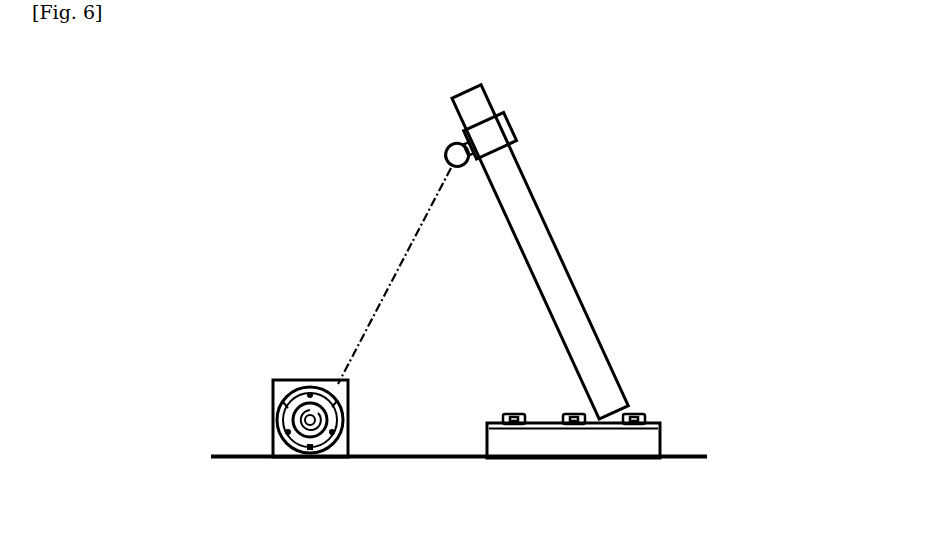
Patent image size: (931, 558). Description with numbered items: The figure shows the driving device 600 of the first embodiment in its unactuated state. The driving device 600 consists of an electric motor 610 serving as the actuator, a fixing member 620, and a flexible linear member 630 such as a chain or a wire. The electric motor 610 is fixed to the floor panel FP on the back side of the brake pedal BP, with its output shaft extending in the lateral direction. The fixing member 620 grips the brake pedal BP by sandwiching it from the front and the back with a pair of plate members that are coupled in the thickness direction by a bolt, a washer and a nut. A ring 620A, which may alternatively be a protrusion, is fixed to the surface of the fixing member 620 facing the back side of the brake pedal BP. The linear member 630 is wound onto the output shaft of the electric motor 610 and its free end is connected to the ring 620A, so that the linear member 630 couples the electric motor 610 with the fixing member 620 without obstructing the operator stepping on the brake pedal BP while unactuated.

The driving device 600 is at (620, 143).
The electric motor 610 is at (305, 380).
The fixing member 620 is at (508, 132).
The ring 620A is at (447, 150).
The linear member 630 is at (393, 275).
The brake pedal BP is at (560, 249).
The floor panel FP is at (690, 453).